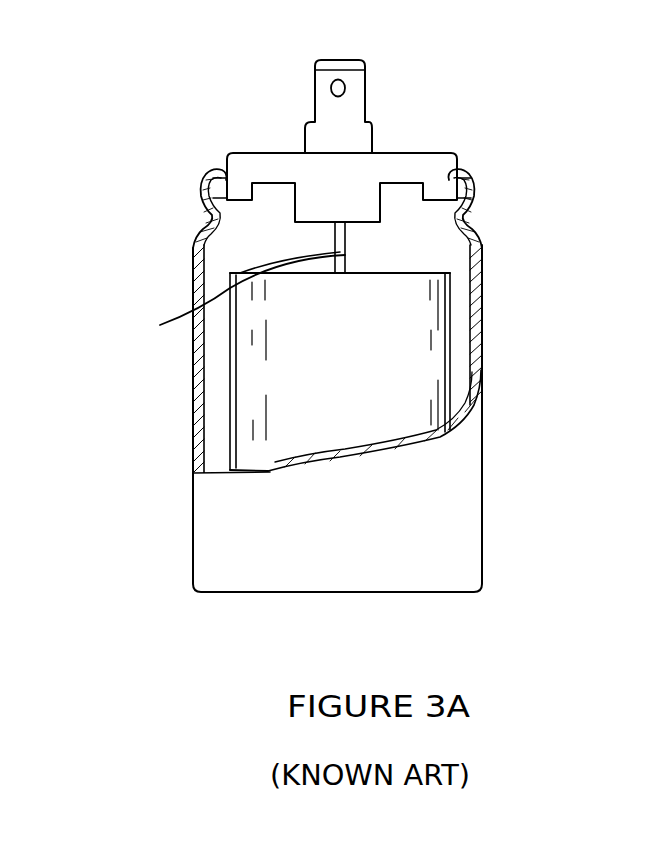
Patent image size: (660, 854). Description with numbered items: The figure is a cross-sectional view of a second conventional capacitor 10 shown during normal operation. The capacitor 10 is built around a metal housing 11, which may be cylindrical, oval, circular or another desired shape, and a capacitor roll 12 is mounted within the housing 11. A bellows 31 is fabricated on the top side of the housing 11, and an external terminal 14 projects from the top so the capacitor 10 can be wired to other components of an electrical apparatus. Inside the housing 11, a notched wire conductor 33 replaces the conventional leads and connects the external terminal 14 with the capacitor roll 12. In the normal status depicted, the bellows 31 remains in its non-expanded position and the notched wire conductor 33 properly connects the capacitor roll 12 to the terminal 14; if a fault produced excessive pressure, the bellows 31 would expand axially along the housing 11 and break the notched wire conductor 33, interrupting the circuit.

The capacitor 10 is at (512, 133).
The metal housing 11 is at (458, 497).
The capacitor roll 12 is at (407, 382).
The external terminals 14 is at (358, 95).
The bellows 31 is at (480, 220).
The notched wire conductor 33 is at (234, 305).